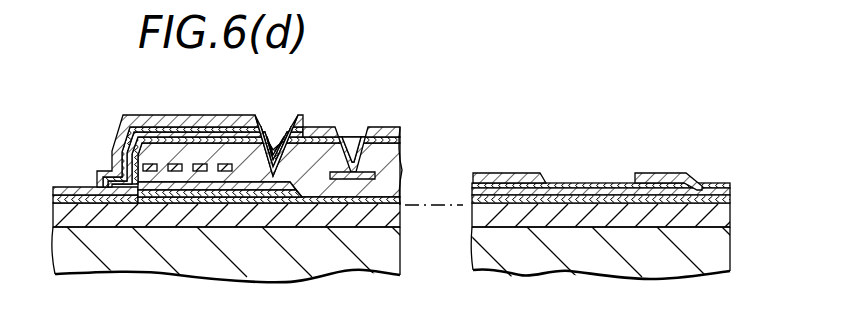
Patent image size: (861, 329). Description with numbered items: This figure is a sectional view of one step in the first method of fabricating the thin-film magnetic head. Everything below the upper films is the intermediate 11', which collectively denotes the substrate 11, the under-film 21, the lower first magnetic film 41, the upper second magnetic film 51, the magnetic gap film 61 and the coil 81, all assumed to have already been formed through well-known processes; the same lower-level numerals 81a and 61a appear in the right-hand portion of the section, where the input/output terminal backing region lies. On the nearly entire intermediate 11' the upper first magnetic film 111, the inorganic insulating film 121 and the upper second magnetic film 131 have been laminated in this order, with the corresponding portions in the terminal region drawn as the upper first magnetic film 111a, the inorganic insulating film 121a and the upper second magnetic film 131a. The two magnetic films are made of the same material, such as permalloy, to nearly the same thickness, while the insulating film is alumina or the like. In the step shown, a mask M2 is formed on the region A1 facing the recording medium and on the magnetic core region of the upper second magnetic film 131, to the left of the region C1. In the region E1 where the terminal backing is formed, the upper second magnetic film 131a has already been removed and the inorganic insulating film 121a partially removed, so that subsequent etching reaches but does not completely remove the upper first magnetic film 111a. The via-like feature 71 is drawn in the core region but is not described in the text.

The substrate 11 is at (548, 269).
The intermediate 11' is at (228, 257).
The under-film 21 is at (397, 212).
The lower first magnetic film 41 is at (157, 195).
The upper second magnetic film 51 is at (140, 200).
The magnetic gap film 61 is at (196, 190).
The coil 81 is at (243, 185).
The upper second magnetic film 131 is at (137, 115).
The upper first magnetic film 111 is at (166, 141).
The inorganic insulating film 121 is at (202, 127).
The mask M2 is at (246, 122).
The region C1 is at (310, 135).
The contact plug / via conductor 71 is at (336, 158).
The region facing the recording medium A1 is at (97, 170).
The upper second magnetic film 131a is at (487, 182).
The upper first magnetic film 111a is at (522, 190).
The inorganic insulating film 121a is at (573, 182).
The region E1 is at (611, 183).
The upper electrode layer (second region) 81a is at (520, 197).
The semiconductor layer (second region) 61a is at (558, 192).